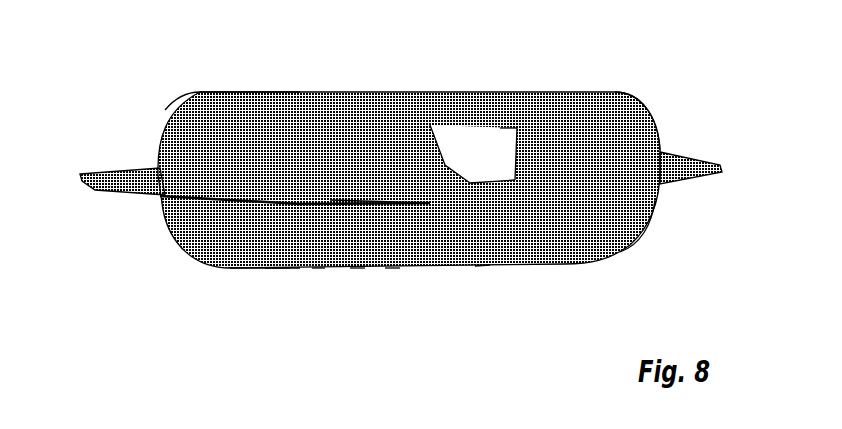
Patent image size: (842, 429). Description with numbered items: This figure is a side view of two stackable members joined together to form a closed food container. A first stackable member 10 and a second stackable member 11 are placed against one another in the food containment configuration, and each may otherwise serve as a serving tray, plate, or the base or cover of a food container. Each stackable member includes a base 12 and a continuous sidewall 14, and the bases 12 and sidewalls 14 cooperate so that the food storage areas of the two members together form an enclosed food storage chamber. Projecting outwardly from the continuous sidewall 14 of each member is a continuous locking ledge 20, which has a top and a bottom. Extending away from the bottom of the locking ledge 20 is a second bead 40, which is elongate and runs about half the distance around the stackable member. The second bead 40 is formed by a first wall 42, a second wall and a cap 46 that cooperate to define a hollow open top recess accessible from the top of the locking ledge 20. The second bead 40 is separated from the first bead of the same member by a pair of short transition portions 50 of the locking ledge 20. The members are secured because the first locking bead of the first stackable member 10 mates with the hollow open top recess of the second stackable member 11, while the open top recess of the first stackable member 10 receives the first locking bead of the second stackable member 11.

The stackable member 10 is at (173, 252).
The second stackable member 11 is at (160, 97).
The base 12 is at (237, 92).
The continuous sidewall 14 is at (643, 124).
The continuous locking ledge 20 is at (428, 188).
The second bead 40 is at (543, 160).
The first wall 42 is at (493, 178).
The cap 46 is at (508, 175).
The transition portions 50 is at (425, 180).